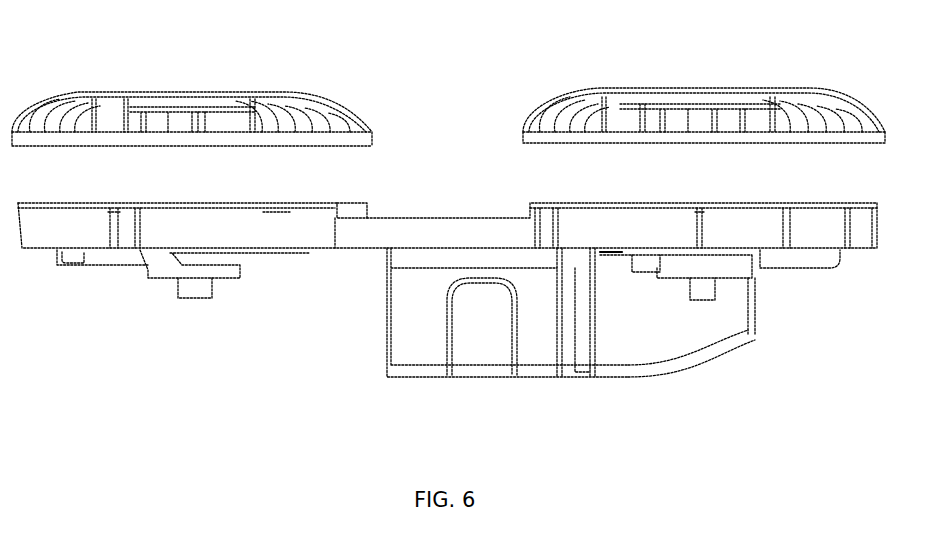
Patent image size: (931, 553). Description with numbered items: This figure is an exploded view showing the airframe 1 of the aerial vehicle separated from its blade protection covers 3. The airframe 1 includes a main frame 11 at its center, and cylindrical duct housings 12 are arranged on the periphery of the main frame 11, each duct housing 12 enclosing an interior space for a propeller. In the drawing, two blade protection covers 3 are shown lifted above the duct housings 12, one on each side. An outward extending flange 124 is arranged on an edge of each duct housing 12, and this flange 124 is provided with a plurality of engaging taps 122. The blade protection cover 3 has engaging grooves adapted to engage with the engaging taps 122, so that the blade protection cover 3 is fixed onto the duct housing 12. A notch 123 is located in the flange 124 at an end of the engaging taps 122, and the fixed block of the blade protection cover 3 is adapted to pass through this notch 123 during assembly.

The airframe 1 is at (448, 234).
The blade protection cover 3 is at (160, 137).
The main frame 11 is at (418, 233).
The duct housing 12 is at (233, 230).
The engaging tap 122 is at (133, 205).
The notch 123 is at (748, 203).
The flange 124 is at (268, 205).